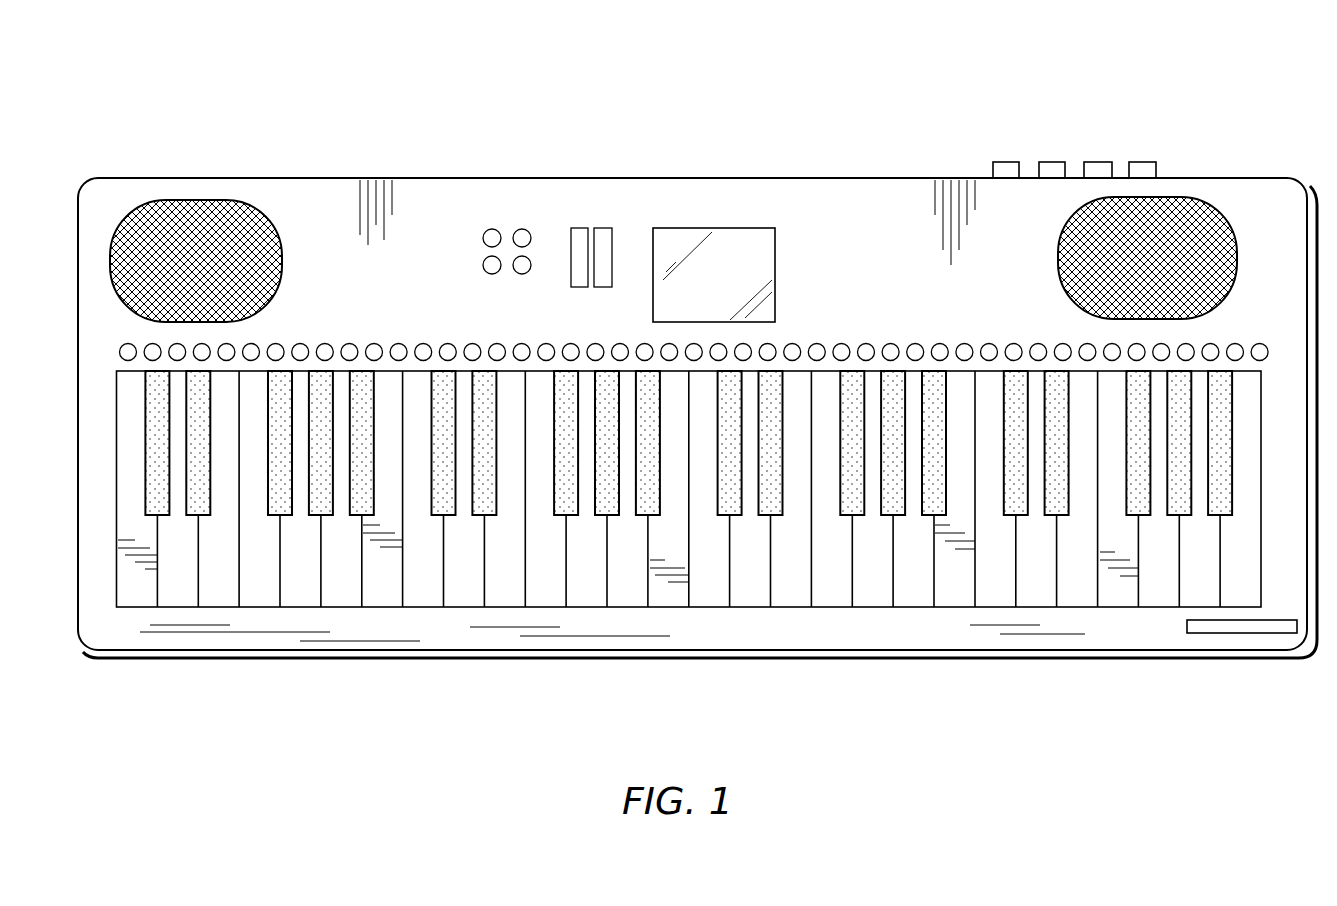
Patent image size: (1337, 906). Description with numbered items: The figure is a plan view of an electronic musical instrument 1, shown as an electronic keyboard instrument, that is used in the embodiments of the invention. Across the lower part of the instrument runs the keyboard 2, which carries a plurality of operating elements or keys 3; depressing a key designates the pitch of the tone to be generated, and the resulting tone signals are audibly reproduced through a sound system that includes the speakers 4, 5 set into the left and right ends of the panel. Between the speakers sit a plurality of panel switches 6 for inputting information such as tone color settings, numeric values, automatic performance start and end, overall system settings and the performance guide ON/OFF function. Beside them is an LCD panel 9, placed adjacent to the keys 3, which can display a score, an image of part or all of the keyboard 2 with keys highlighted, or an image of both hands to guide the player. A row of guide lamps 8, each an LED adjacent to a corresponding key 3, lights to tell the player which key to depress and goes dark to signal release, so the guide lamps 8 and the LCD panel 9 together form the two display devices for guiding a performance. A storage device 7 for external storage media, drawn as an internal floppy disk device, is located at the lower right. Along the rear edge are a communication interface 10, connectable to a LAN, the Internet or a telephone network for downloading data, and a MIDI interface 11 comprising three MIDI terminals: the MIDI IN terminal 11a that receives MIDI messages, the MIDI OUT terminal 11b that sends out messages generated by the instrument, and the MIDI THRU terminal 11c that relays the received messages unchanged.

The electronic musical instrument 1 is at (857, 672).
The keyboard 2 is at (634, 612).
The keys 3 is at (452, 516).
The speaker 4 is at (192, 200).
The speaker 5 is at (1166, 200).
The panel switches 6 is at (473, 220).
The storage device 7 is at (1238, 634).
The guide lamps 8 is at (884, 344).
The LCD panel 9 is at (716, 228).
The communication interface 10 is at (1005, 162).
The MIDI interface 11 is at (1100, 105).
The MIDI IN terminal 11a is at (1050, 162).
The MIDI OUT terminal 11b is at (1098, 162).
The MIDI THRU terminal 11c is at (1151, 135).